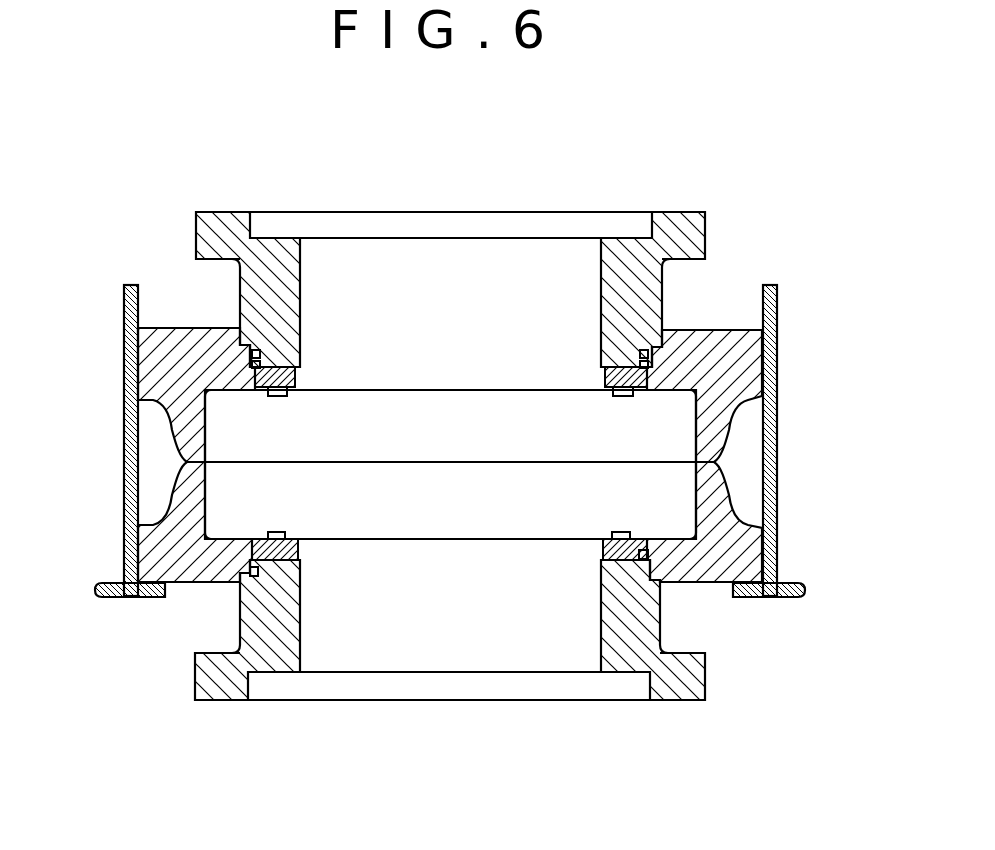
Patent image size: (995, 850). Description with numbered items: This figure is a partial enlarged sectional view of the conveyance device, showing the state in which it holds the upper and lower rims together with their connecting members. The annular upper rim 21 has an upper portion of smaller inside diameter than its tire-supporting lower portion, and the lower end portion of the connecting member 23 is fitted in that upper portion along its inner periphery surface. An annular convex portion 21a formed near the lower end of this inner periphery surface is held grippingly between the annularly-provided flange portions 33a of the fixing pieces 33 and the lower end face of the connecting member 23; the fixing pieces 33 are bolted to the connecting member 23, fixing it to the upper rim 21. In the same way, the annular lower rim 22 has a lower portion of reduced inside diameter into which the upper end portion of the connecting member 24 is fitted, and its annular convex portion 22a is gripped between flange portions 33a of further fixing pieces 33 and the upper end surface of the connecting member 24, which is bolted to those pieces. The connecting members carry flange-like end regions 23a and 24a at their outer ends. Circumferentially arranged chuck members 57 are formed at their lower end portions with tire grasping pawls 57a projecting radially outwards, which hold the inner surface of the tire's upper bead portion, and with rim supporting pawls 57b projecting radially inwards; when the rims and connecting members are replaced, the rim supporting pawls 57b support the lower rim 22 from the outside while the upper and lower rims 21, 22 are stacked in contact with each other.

The upper rim 21 is at (182, 413).
The annular convex portion 21a is at (257, 372).
The lower rim 22 is at (182, 509).
The annular convex portion 22a is at (250, 560).
The connecting member 23 is at (290, 293).
The flange of upper bearing holder 23a is at (224, 222).
The connecting member 24 is at (290, 617).
The flange of lower bearing holder 24a is at (209, 693).
The fixing pieces 33 is at (290, 388).
The flange portions 33a is at (255, 382).
The chuck members 57 is at (125, 462).
The tire grasping pawls 57a is at (105, 597).
The rim supporting pawls 57b is at (150, 597).